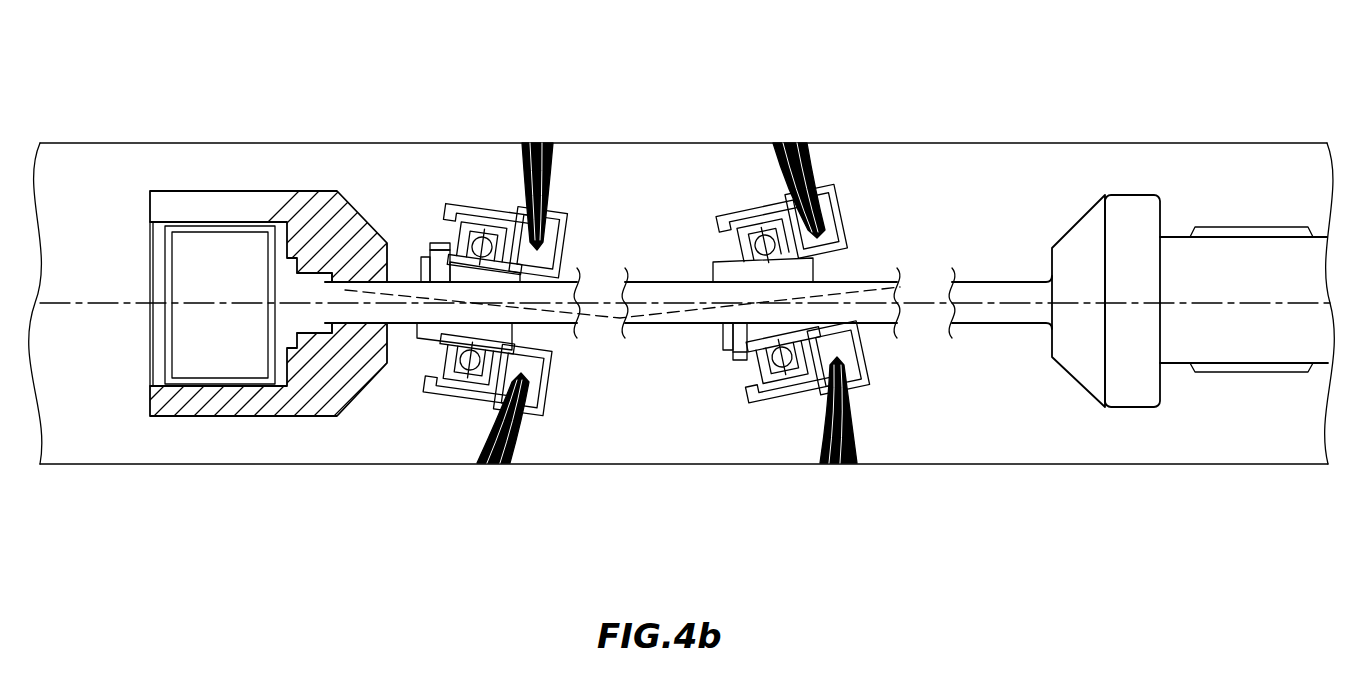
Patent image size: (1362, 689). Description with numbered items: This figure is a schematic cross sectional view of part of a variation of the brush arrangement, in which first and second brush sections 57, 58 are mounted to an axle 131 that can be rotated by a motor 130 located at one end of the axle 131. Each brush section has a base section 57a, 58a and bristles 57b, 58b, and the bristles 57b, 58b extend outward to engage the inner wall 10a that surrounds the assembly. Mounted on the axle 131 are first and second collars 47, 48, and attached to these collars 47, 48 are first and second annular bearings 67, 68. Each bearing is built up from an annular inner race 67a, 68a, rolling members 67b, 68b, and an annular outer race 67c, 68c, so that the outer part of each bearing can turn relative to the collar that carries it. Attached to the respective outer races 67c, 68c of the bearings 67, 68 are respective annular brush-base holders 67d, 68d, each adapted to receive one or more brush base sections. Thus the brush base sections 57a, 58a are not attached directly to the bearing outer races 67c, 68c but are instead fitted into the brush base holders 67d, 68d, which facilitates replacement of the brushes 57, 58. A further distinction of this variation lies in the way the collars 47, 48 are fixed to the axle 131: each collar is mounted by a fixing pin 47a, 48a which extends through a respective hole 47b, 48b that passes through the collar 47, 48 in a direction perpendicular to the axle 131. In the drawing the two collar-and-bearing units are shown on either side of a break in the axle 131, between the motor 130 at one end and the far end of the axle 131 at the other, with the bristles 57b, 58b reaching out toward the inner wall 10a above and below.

The inner wall 10a is at (980, 143).
The first collar 47 is at (520, 335).
The fixing pin 47a is at (428, 250).
The hole 47b is at (421, 262).
The second collar 48 is at (722, 338).
The fixing pin 48a is at (737, 361).
The hole 48b is at (712, 352).
The first brush section 57 is at (550, 162).
The base section 57a is at (487, 222).
The bristles 57b is at (540, 143).
The second brush section 58 is at (844, 139).
The base section 58a is at (832, 190).
The bristles 58b is at (793, 143).
The first annular bearing 67 is at (443, 289).
The annular inner race 67a is at (458, 207).
The rolling members 67b is at (452, 378).
The annular outer race 67c is at (470, 385).
The annular brush-base holder 67d is at (440, 392).
The second annular bearing 68 is at (780, 298).
The annular inner race 68a is at (742, 257).
The rolling members 68b is at (772, 380).
The annular outer race 68c is at (805, 392).
The annular brush-base holder 68d is at (790, 390).
The motor 130 is at (232, 365).
The axle 131 is at (997, 313).